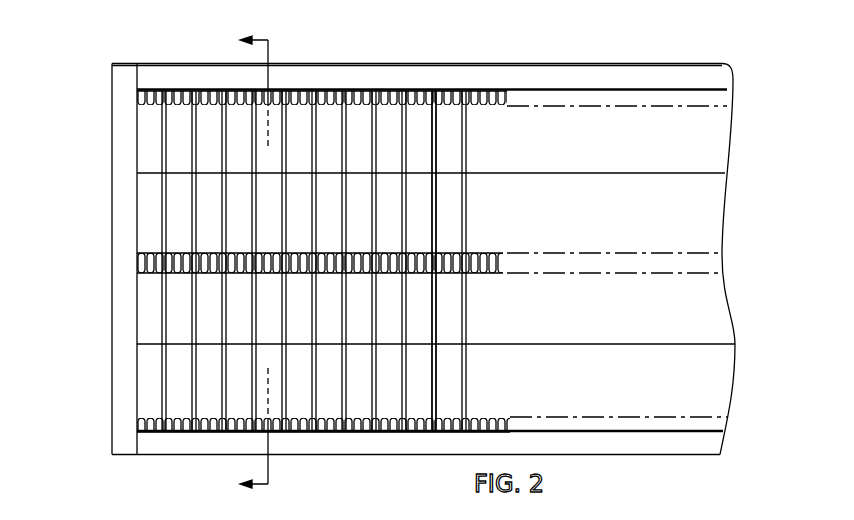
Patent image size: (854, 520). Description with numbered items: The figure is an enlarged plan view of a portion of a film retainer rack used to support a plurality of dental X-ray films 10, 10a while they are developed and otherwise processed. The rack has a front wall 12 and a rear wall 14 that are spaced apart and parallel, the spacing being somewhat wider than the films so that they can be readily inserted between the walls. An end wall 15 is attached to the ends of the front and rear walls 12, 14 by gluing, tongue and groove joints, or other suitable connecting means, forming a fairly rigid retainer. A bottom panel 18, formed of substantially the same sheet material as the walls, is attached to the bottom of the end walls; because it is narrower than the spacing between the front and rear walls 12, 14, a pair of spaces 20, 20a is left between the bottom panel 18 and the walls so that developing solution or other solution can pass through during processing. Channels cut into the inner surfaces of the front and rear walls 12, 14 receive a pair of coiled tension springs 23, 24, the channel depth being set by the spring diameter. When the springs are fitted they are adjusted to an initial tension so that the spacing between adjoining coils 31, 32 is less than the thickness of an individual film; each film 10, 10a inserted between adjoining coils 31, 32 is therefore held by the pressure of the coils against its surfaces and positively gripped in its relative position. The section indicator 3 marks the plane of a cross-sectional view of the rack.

The section line 3- 3 is at (254, 263).
The dental X-ray film 10 is at (437, 241).
The dental X-ray film 10a is at (463, 148).
The front wall 12 is at (653, 442).
The rear wall 14 is at (573, 73).
The end wall 15 is at (115, 227).
The bottom panel 18 is at (567, 187).
The space 20 is at (680, 382).
The space 20a is at (703, 138).
The coiled tension spring 23 is at (493, 415).
The coiled tension spring 24 is at (505, 108).
The adjoining coil 31 is at (424, 110).
The adjoining coil 32 is at (437, 108).